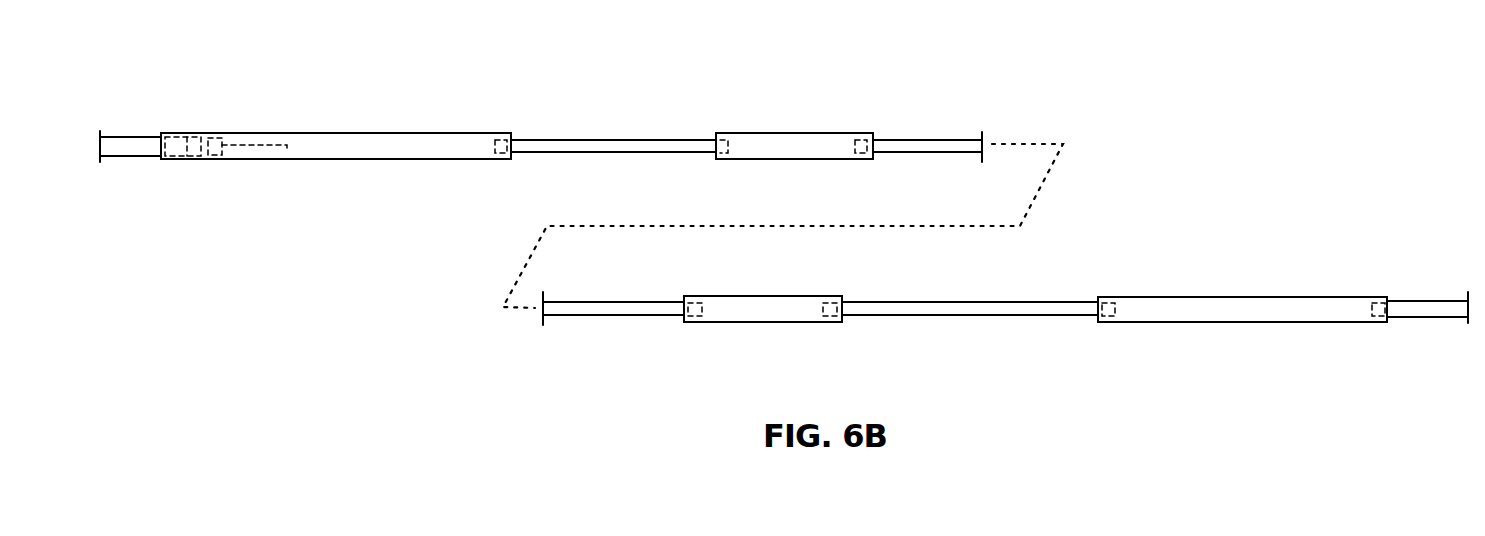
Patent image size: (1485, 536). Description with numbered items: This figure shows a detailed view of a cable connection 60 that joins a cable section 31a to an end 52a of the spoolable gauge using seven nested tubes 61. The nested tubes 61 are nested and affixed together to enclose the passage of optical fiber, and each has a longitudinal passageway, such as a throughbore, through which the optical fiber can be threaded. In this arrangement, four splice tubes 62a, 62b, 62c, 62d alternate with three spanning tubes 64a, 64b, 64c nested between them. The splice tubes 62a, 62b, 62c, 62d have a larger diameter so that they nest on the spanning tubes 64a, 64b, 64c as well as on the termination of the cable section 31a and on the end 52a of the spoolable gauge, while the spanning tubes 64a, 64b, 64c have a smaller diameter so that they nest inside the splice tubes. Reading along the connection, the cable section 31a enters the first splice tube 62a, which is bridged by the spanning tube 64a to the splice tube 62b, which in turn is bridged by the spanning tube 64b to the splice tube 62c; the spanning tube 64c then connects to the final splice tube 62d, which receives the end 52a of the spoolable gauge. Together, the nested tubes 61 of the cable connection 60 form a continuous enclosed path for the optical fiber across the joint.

The cable connection 60 is at (177, 70).
The nested tubes 61 is at (466, 194).
The cable section 31a is at (132, 157).
The splice tube 62a is at (246, 132).
The spanning tube 64a is at (600, 140).
The splice tube 62b is at (797, 132).
The spanning tube 64b is at (937, 140).
The splice tube 62c is at (790, 295).
The spanning tube 64c is at (1065, 300).
The splice tube 62d is at (1250, 296).
The end of the spoolable gauge 52a is at (1422, 320).